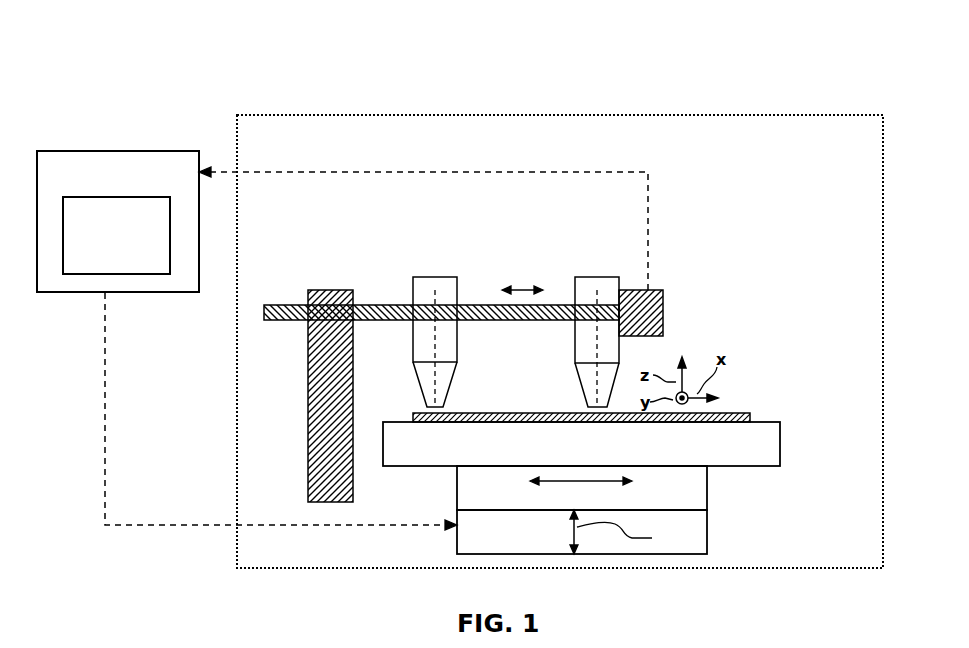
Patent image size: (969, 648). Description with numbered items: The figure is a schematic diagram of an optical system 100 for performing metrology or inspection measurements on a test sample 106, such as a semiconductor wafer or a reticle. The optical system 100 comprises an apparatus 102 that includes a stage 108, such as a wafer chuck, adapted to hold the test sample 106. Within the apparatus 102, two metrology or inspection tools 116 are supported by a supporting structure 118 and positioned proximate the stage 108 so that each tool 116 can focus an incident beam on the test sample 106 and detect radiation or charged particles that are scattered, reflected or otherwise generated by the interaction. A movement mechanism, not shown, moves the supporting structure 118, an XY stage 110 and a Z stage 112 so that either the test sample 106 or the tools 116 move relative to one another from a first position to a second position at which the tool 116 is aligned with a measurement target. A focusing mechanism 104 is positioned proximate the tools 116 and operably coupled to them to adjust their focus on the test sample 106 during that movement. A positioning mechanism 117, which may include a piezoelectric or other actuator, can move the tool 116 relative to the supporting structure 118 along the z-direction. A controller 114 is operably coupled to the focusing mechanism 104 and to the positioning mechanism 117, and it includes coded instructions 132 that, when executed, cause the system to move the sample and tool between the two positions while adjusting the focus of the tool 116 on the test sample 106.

The optical system 100 is at (693, 97).
The apparatus 102 is at (740, 115).
The focusing mechanism 104 is at (665, 313).
The test sample 106 is at (733, 412).
The stage 108 is at (780, 442).
The XY stage 110 is at (707, 492).
The Z stage 112 is at (697, 540).
The controller 114 is at (105, 151).
The metrology or inspection tool 116 is at (413, 287).
The positioning mechanism 117 is at (308, 292).
The supporting structure 118 is at (530, 320).
The coded instructions 132 is at (116, 235).